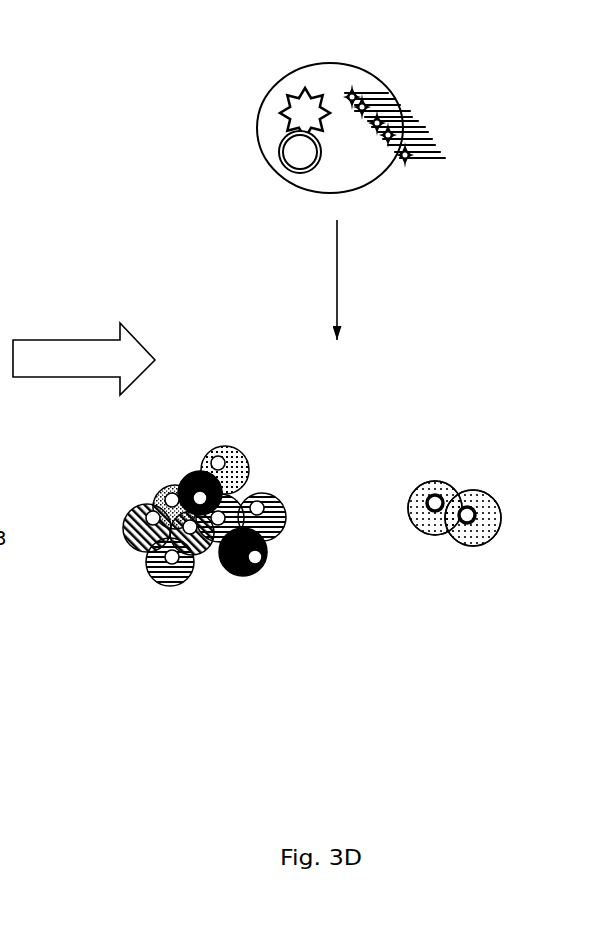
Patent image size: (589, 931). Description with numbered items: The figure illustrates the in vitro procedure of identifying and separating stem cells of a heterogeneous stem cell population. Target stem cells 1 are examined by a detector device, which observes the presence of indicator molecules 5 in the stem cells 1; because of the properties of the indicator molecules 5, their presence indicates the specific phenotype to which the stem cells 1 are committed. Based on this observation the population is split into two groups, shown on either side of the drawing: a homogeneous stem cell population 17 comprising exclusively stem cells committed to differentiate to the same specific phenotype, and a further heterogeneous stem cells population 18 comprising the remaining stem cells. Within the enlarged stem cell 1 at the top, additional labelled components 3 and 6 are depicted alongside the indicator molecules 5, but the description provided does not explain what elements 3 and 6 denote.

The stem cells 1 is at (250, 110).
The marker compound 3 is at (297, 102).
The indicator molecules 5 is at (403, 113).
The magnetic bead 6 is at (308, 152).
The homogeneous stem cell population 17 is at (452, 543).
The heterogeneous stem cells population 18 is at (202, 577).